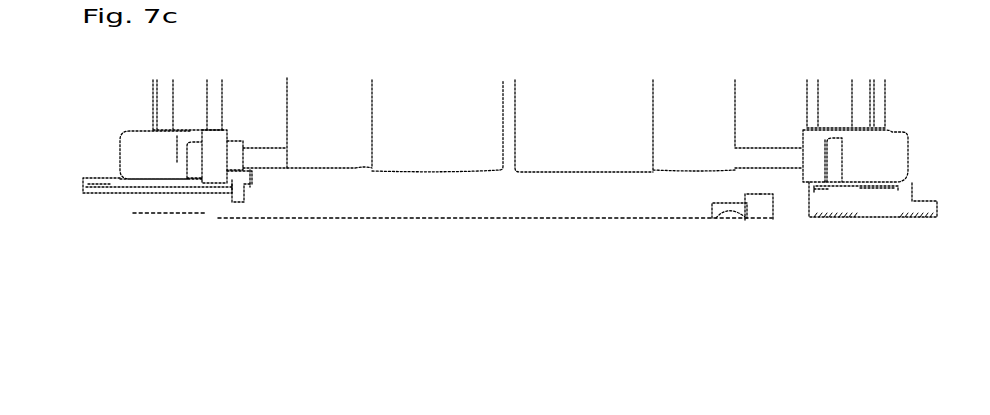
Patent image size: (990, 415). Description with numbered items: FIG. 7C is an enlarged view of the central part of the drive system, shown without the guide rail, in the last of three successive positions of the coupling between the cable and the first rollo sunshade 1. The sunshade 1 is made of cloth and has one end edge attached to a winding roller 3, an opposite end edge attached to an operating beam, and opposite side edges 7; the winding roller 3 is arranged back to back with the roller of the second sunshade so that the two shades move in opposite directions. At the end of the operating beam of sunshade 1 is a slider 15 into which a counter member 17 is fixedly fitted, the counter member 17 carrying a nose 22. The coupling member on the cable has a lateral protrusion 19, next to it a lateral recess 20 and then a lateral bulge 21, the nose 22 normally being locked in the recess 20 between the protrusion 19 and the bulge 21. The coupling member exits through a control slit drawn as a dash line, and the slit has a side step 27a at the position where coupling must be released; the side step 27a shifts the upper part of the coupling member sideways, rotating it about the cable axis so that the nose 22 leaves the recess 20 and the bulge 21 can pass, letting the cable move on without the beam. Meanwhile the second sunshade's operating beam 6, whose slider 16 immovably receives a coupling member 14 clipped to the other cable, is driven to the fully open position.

The sunshade 1 is at (265, 107).
The winding roller 3 is at (489, 159).
The operating beam 6 is at (852, 87).
The side edge 7 is at (270, 160).
The coupling member 14 is at (887, 202).
The slider 15 is at (150, 158).
The slider 16 is at (893, 152).
The counter member 17 is at (206, 189).
The lateral protrusion 19 is at (763, 198).
The lateral recess 20 is at (747, 206).
The lateral bulge 21 is at (729, 218).
The nose 22 is at (243, 201).
The side step 27a is at (214, 216).